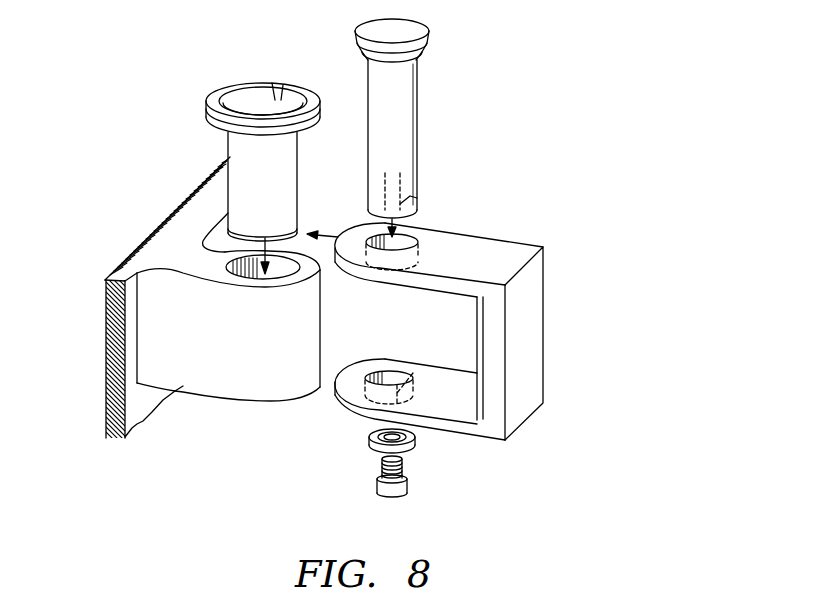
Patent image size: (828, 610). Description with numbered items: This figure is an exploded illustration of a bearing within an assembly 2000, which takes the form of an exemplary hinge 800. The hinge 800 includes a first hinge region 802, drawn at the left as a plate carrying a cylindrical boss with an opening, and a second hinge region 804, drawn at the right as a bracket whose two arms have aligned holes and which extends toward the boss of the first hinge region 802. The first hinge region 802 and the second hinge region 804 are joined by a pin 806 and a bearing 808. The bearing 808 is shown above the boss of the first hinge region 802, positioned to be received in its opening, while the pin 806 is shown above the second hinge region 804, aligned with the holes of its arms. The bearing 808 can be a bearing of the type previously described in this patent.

The assembly 2000 is at (643, 67).
The hinge 800 is at (552, 124).
The first hinge region 802 is at (137, 243).
The second hinge region 804 is at (545, 283).
The pin 806 is at (408, 120).
The bearing 808 is at (228, 160).